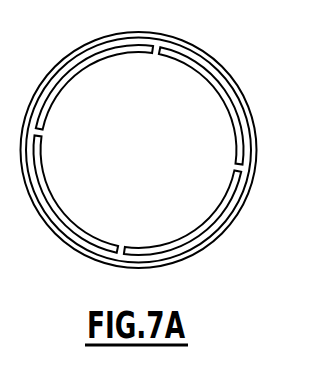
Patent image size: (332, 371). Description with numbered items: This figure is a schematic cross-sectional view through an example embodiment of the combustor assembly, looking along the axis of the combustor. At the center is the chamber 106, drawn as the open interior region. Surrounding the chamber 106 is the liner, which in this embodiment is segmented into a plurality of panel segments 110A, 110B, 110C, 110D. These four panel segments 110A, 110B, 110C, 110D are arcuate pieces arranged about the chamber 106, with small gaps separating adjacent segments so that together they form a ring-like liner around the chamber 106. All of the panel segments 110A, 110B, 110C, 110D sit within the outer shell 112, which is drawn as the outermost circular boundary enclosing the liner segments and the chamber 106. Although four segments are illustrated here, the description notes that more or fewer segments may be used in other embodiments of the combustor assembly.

The outer shell 112 is at (226, 75).
The panel segment 110A is at (67, 87).
The panel segment 110B is at (219, 97).
The panel segment 110C is at (216, 210).
The panel segment 110D is at (58, 205).
The chamber 106 is at (159, 160).